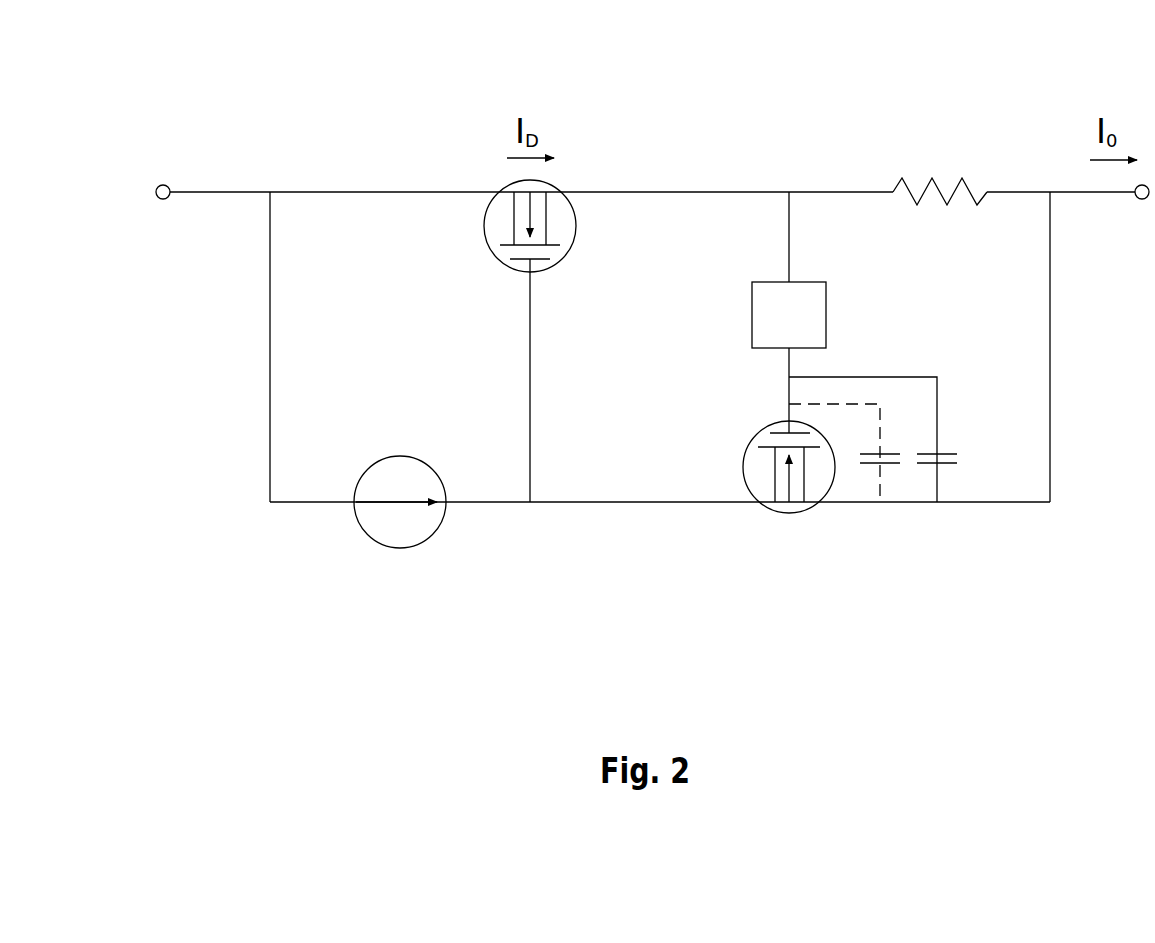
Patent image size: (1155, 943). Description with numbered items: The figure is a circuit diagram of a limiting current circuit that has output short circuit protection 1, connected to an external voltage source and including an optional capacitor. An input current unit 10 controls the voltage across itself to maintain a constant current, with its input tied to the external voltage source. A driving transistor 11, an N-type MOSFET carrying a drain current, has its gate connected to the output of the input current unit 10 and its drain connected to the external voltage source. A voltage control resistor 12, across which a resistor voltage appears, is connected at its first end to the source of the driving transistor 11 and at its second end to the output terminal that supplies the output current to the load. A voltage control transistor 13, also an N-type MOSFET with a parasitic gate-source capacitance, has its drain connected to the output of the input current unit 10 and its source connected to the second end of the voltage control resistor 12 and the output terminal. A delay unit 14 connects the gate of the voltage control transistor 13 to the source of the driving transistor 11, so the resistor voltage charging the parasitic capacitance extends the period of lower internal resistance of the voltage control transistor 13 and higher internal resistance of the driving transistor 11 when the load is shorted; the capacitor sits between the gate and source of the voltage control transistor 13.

The limiting current circuit that has output short circuit protection 1 is at (208, 147).
The input current unit 10 is at (400, 548).
The driving transistor 11 is at (518, 186).
The voltage control resistor 12 is at (934, 184).
The voltage control transistor 13 is at (788, 514).
The delay unit 14 is at (767, 304).